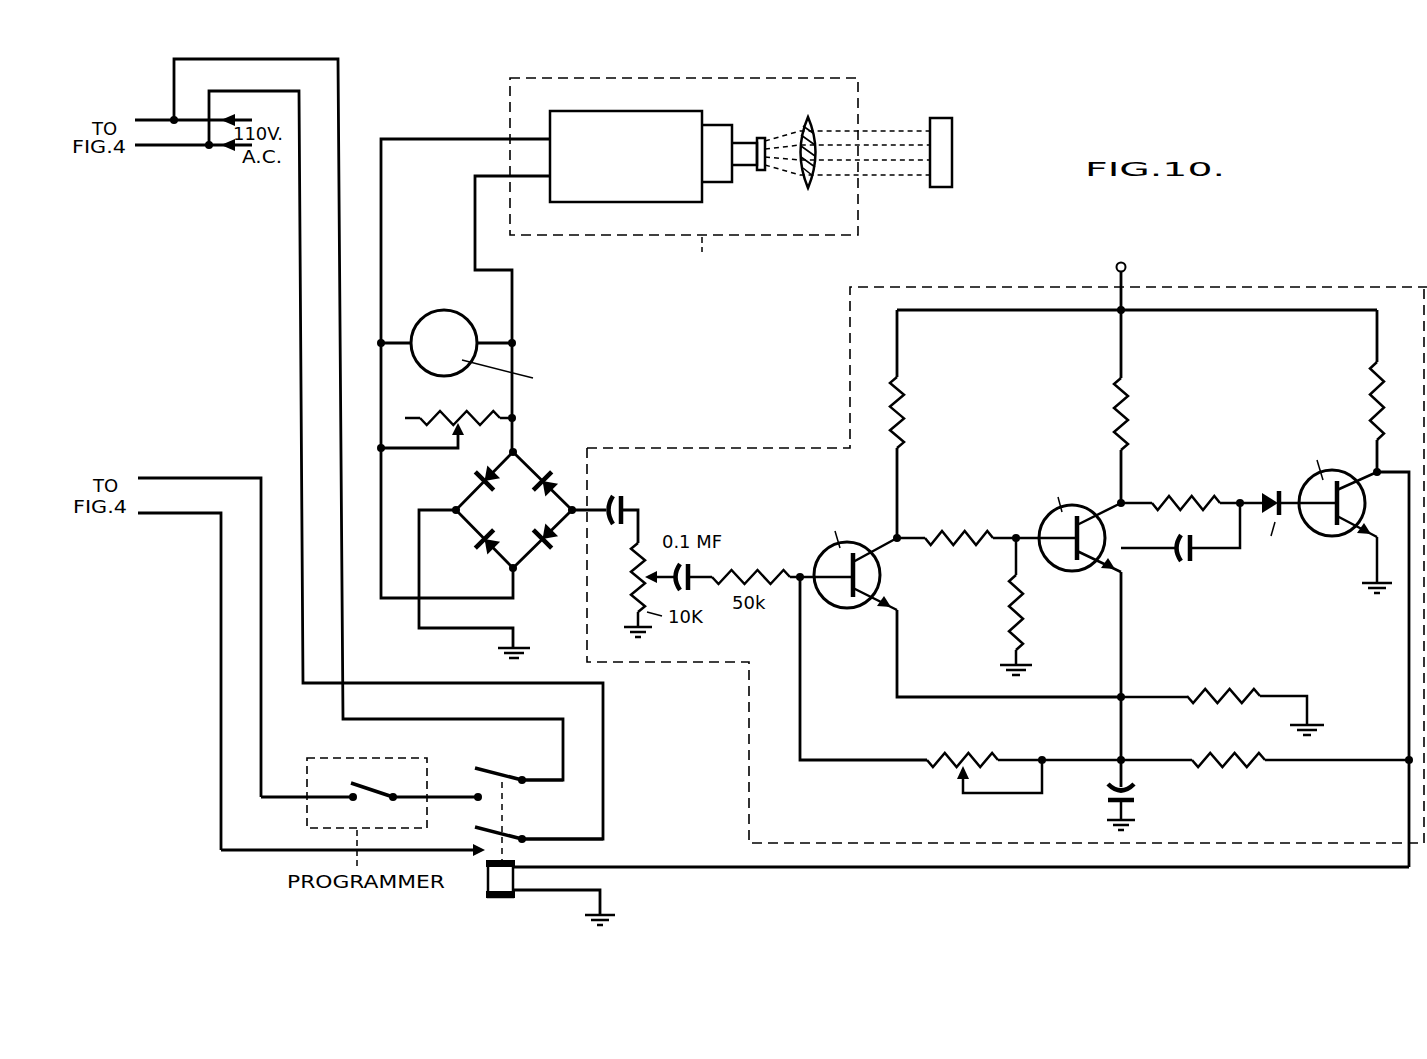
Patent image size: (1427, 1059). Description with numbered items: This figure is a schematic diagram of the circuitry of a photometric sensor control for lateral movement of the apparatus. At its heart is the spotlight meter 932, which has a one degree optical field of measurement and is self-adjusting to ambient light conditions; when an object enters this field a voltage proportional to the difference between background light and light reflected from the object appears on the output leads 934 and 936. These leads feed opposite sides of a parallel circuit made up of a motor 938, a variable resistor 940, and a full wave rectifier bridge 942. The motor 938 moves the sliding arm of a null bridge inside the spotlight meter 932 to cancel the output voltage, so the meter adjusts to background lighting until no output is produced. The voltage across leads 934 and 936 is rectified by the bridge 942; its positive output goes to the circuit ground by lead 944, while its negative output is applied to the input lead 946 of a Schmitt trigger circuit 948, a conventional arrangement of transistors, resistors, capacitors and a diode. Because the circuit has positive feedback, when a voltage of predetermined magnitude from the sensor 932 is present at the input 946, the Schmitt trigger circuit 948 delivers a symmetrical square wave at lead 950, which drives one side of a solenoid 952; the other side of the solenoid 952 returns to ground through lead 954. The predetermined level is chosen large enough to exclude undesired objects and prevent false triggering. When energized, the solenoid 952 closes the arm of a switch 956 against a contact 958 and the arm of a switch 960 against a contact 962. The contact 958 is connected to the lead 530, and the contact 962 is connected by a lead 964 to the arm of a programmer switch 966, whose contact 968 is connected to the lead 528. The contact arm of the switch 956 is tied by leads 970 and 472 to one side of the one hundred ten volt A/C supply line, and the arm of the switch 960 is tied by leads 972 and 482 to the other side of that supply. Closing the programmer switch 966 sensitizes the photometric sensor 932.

The lead 482 is at (145, 118).
The lead 472 is at (149, 148).
The spotlight meter 932 is at (866, 92).
The output lead 934 is at (475, 215).
The output lead 936 is at (452, 139).
The motor 938 is at (442, 319).
The variable resistor 940 is at (433, 419).
The full wave rectifier bridge 942 is at (536, 456).
The lead 944 is at (458, 631).
The input lead 946 is at (597, 507).
The Schmitt trigger circuit 948 is at (1343, 283).
The lead 950 is at (1030, 868).
The solenoid 952 is at (494, 878).
The lead 954 is at (545, 891).
The switch 956 is at (511, 836).
The contact 958 is at (353, 841).
The switch 960 is at (498, 769).
The contact 962 is at (478, 796).
The lead 964 is at (462, 799).
The programmer switch 966 is at (382, 795).
The contact 968 is at (352, 800).
The lead 970 is at (604, 762).
The lead 972 is at (343, 645).
The lead 528 is at (186, 475).
The lead 530 is at (180, 517).